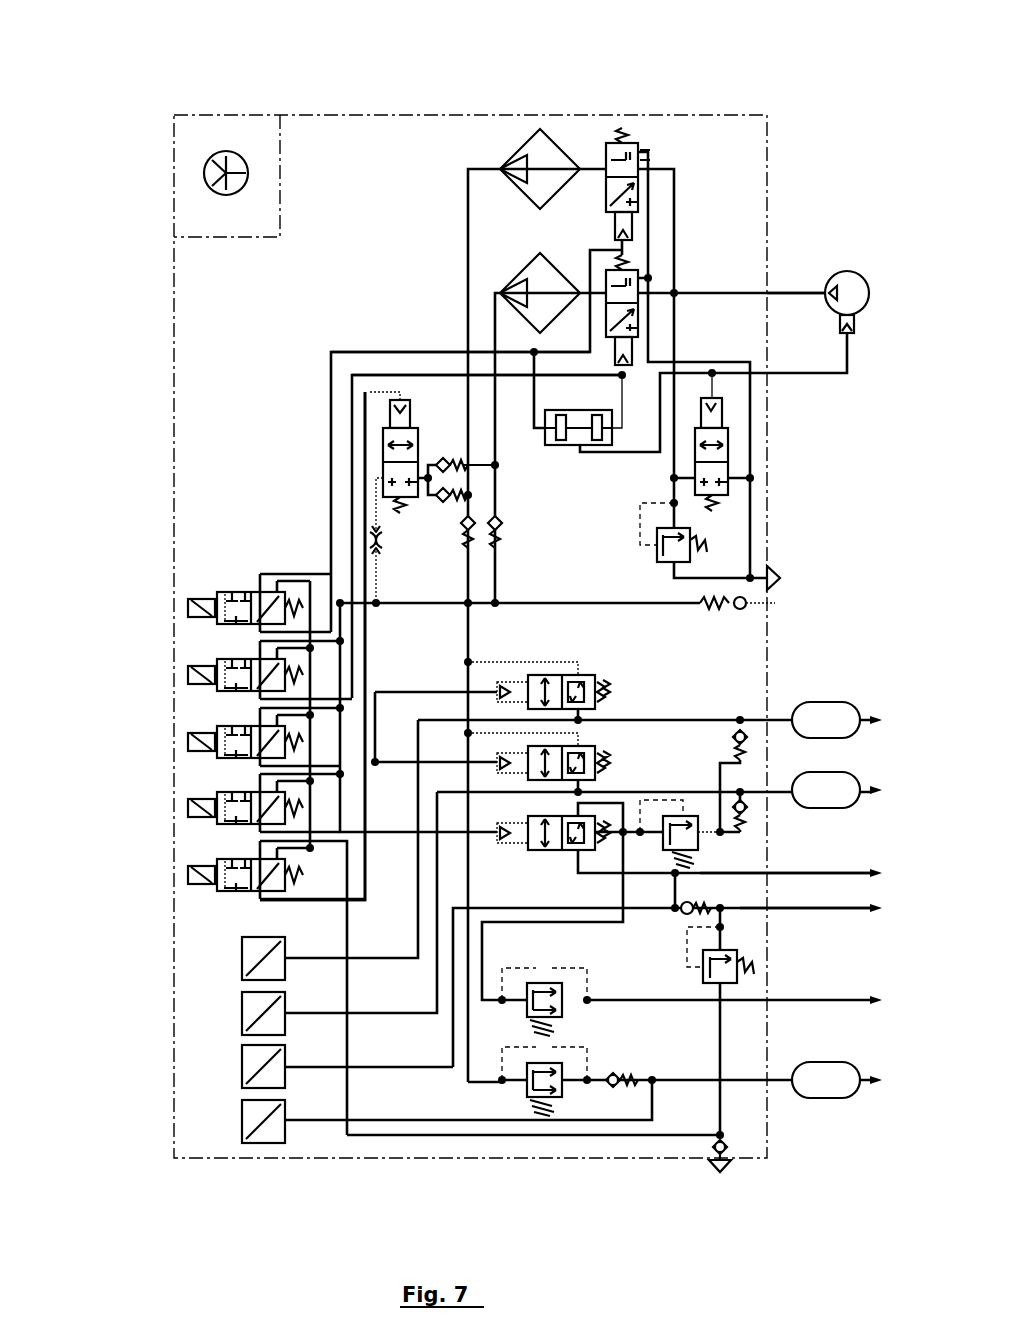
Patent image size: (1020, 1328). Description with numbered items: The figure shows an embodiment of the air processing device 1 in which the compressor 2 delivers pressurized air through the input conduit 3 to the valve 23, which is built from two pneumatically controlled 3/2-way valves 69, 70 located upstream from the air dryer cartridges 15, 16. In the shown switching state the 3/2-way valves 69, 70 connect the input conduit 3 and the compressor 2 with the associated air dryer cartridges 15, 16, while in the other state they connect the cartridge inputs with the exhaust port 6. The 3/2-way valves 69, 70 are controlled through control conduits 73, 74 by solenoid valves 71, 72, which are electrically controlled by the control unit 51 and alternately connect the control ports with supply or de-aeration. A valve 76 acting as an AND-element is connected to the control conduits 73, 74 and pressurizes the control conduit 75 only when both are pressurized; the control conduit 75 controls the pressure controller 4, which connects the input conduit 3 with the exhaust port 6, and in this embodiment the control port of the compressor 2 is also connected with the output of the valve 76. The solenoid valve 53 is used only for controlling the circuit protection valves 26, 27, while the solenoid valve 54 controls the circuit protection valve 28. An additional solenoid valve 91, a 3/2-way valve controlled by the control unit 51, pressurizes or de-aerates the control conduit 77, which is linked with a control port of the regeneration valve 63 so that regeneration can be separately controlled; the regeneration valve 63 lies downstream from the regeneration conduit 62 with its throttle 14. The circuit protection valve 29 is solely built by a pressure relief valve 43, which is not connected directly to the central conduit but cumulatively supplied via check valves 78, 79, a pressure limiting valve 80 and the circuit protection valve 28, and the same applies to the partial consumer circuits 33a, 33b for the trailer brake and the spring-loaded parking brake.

The air processing device 1 is at (410, 86).
The compressor 2 is at (849, 282).
The input conduit 3 is at (783, 291).
The pressure controller 4 is at (742, 452).
The exhaust port 6 is at (782, 578).
The throttle 14 is at (368, 540).
The air dryer cartridge 15 is at (546, 134).
The air dryer cartridge 16 is at (550, 270).
The valve 23 is at (622, 112).
The circuit protection valve 26 is at (600, 666).
The circuit protection valve 27 is at (600, 738).
The circuit protection valve 28 is at (545, 858).
The circuit protection valve 29 is at (598, 986).
The partial consumer circuit 33a is at (835, 873).
The partial consumer circuit 33b is at (838, 908).
The pressure relief valve 43 is at (547, 974).
The control unit 51 is at (264, 224).
The solenoid valve 53 is at (184, 742).
The solenoid valve 54 is at (184, 808).
The regeneration conduit 62 is at (370, 567).
The regeneration valve 63 is at (378, 457).
The 3/2-way valve 69 is at (654, 126).
The 3/2-way valve 70 is at (644, 262).
The solenoid valve 71 is at (184, 608).
The solenoid valve 72 is at (184, 675).
The control conduit 73 is at (386, 350).
The control conduit 74 is at (432, 373).
The control conduit 75 is at (598, 455).
The valve 76 is at (560, 456).
The control conduit 77 is at (260, 902).
The check valve 78 is at (727, 743).
The check valve 79 is at (752, 818).
The pressure limiting valve 80 is at (708, 847).
The solenoid valve 91 is at (184, 875).